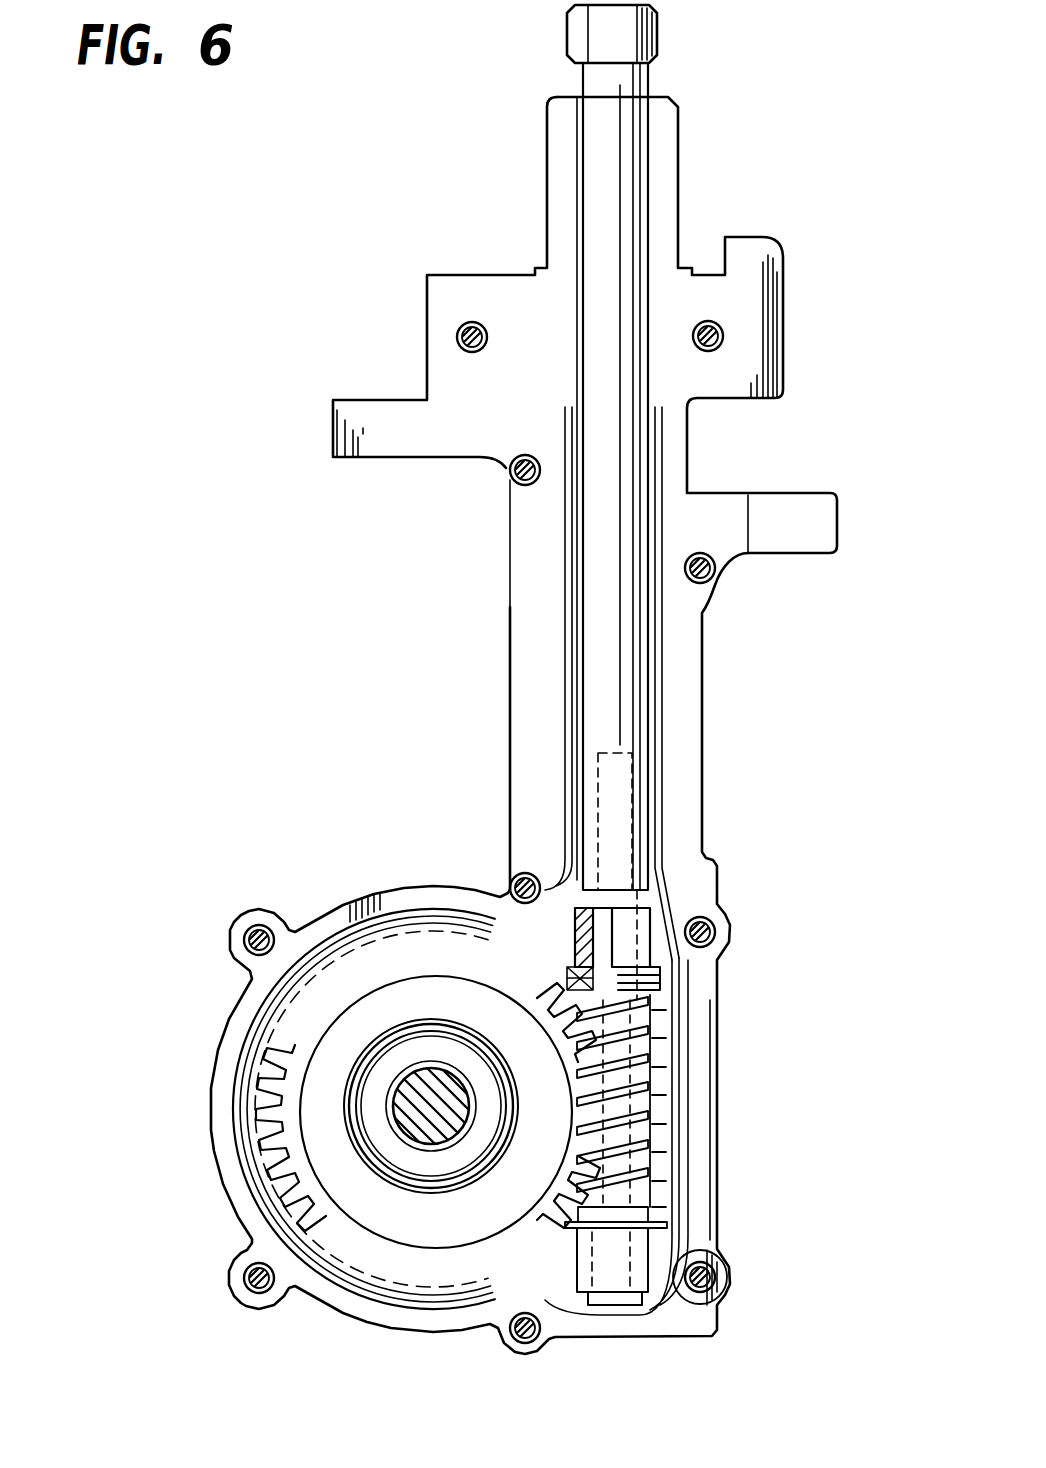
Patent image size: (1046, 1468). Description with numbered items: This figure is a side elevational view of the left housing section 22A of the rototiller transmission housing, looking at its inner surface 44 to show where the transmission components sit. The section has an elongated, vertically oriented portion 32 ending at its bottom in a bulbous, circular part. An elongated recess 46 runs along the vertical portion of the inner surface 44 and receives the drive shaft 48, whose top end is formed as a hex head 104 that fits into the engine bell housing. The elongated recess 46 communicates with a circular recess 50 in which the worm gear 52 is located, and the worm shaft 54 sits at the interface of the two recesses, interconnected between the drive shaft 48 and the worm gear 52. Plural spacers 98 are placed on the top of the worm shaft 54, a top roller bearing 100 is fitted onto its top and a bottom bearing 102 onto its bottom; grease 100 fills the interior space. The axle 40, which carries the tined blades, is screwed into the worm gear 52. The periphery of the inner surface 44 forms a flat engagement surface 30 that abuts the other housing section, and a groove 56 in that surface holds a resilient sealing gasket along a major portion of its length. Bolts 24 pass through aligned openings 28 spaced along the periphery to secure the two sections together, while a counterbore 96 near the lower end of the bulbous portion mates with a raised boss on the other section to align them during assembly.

The left housing section 22A is at (547, 170).
The bolts 24 is at (458, 338).
The aligned openings 28 is at (458, 330).
The flat engagement surface 30 is at (530, 528).
The vertically oriented portion 32 is at (703, 742).
The axle 40 is at (415, 1115).
The inner surface 44 is at (510, 627).
The elongated recess 46 is at (577, 587).
The drive shaft 48 is at (628, 118).
The circular recess 50 is at (270, 1045).
The worm gear 52 is at (262, 1082).
The worm shaft 54 is at (648, 1104).
The groove 56 is at (565, 707).
The counterbore 96 is at (720, 1258).
The spacers 98 is at (660, 985).
The top roller bearing 100 is at (645, 918).
The bottom bearing 102 is at (645, 1285).
The hex head 104 is at (660, 30).